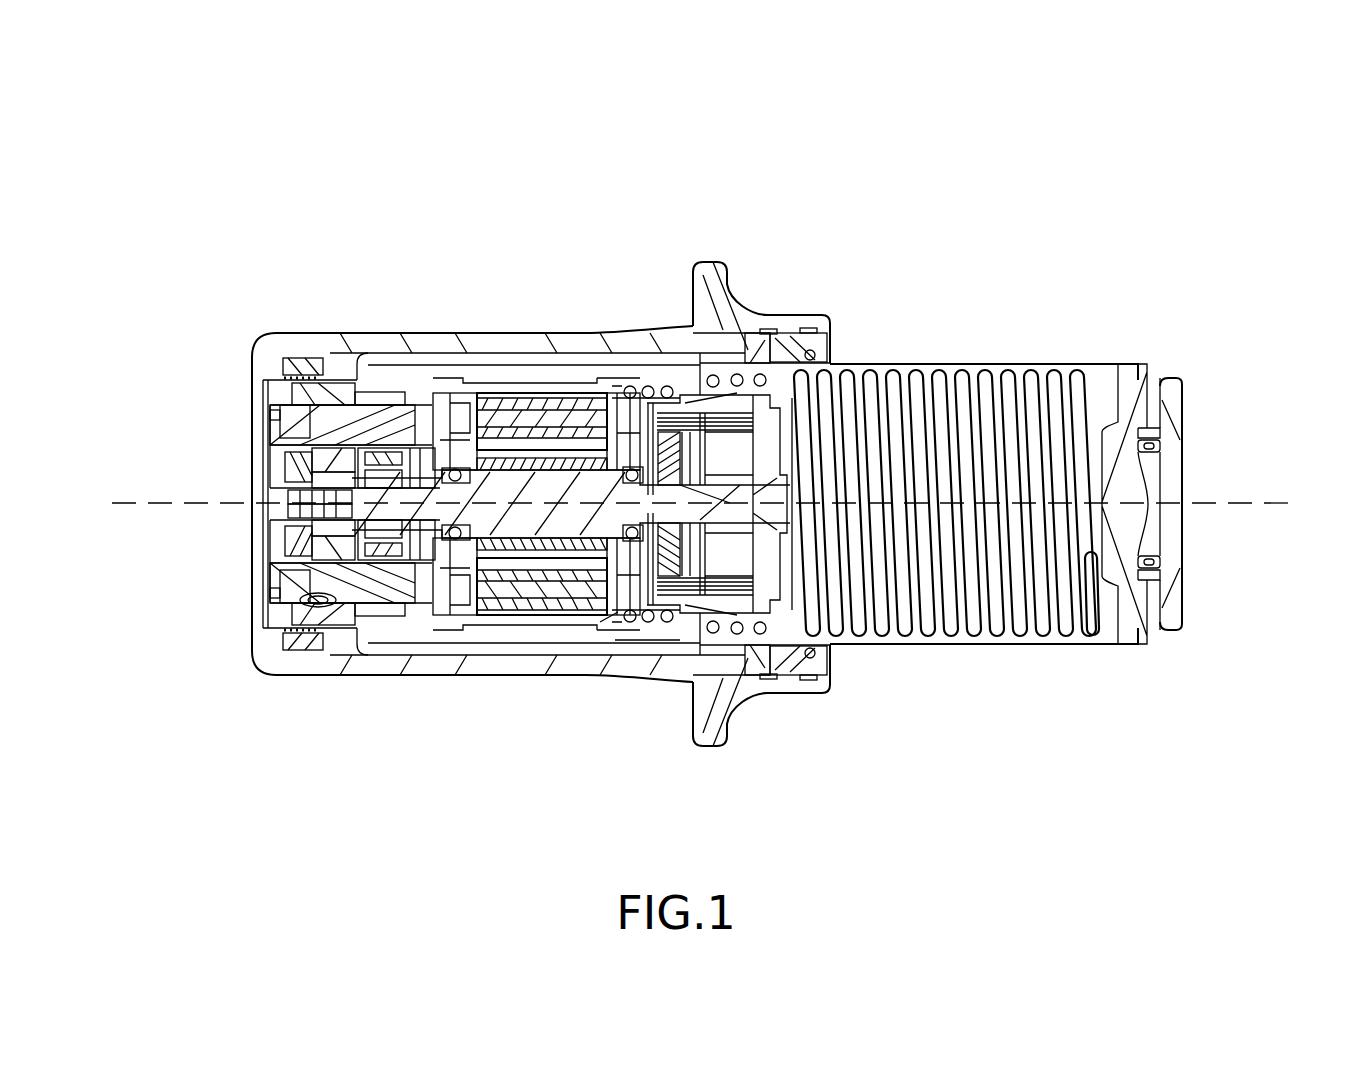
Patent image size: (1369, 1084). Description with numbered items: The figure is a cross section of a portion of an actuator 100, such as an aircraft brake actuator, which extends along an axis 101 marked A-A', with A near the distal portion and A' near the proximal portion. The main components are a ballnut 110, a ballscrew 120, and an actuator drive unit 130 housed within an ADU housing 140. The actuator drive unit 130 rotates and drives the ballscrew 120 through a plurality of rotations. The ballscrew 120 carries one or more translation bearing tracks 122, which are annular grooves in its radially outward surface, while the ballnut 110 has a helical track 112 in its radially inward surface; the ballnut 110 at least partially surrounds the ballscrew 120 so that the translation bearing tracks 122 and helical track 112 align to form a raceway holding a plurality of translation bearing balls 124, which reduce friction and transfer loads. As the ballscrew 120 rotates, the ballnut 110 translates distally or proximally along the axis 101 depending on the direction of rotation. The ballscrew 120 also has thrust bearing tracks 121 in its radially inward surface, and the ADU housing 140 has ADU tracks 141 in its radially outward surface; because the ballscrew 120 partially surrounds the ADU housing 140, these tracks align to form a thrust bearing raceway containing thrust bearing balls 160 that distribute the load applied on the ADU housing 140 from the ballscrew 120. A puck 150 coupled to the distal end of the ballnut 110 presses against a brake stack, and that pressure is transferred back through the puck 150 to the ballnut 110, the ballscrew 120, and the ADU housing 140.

The actuator 100 is at (1030, 171).
The axis 101 is at (136, 503).
The ballnut 110 is at (910, 372).
The helical track 112 is at (868, 645).
The ballscrew 120 is at (687, 382).
The thrust bearing tracks 121 is at (637, 630).
The translation bearing tracks 122 is at (792, 690).
The translation bearing balls 124 is at (742, 362).
The actuator drive unit 130 is at (537, 488).
The ADU housing 140 is at (570, 612).
The ADU tracks 141 is at (653, 387).
The puck 150 is at (1165, 380).
The thrust bearing balls 160 is at (630, 620).